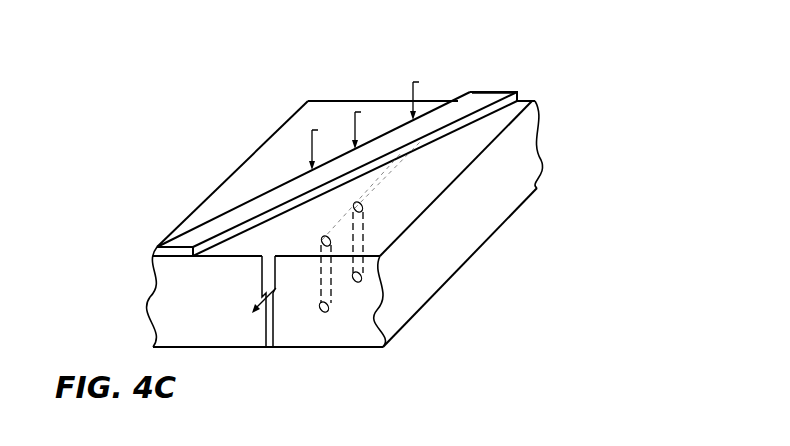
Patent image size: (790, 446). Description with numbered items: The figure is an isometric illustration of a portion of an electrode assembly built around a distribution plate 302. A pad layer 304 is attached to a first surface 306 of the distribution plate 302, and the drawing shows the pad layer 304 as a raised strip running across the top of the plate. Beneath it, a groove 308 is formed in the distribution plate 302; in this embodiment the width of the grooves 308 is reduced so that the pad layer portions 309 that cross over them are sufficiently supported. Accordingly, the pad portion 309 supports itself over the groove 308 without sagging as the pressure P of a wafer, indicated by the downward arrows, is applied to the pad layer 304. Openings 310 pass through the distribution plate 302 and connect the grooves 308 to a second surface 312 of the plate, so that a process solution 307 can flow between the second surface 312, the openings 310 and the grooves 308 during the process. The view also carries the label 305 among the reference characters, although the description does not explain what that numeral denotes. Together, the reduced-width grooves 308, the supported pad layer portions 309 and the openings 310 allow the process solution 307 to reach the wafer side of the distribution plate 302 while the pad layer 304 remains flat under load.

The distribution plate 302 is at (537, 142).
The pad layer 304 is at (474, 88).
The top surface 305 is at (342, 114).
The first surface 306 is at (442, 163).
The process solution 307 is at (340, 337).
The grooves 308 is at (340, 243).
The pad layer portions 309 is at (489, 97).
The openings 310 is at (266, 322).
The second surface 312 is at (358, 296).